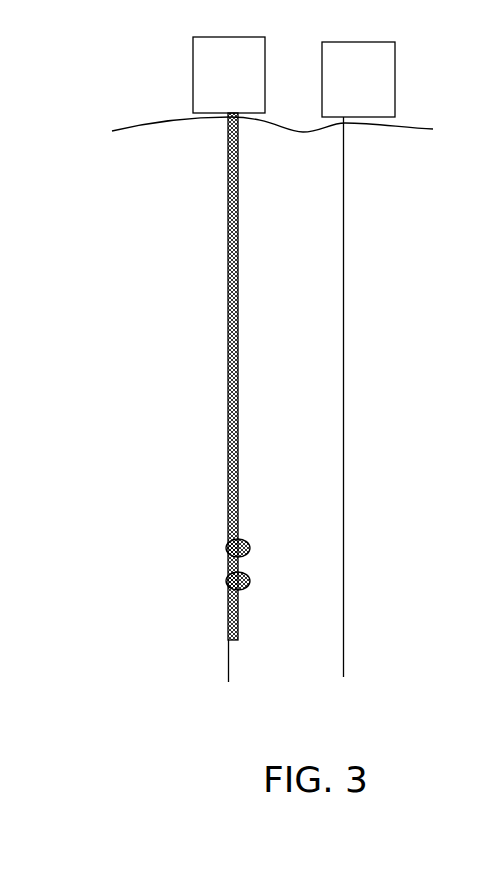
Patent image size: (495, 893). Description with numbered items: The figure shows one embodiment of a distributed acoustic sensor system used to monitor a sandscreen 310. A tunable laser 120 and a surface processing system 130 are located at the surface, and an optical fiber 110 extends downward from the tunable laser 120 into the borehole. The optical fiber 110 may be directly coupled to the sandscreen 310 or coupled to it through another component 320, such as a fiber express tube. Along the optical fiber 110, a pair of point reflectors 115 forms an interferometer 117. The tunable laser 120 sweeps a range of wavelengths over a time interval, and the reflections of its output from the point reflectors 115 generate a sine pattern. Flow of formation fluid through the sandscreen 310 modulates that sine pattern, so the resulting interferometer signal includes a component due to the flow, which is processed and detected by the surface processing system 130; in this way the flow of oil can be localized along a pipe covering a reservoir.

The optical fiber 110 is at (265, 397).
The point reflectors 115 is at (228, 553).
The interferometer 117 is at (138, 564).
The tunable laser 120 is at (204, 92).
The surface processing system 130 is at (333, 94).
The sandscreen 310 is at (228, 377).
The component 320 is at (232, 242).